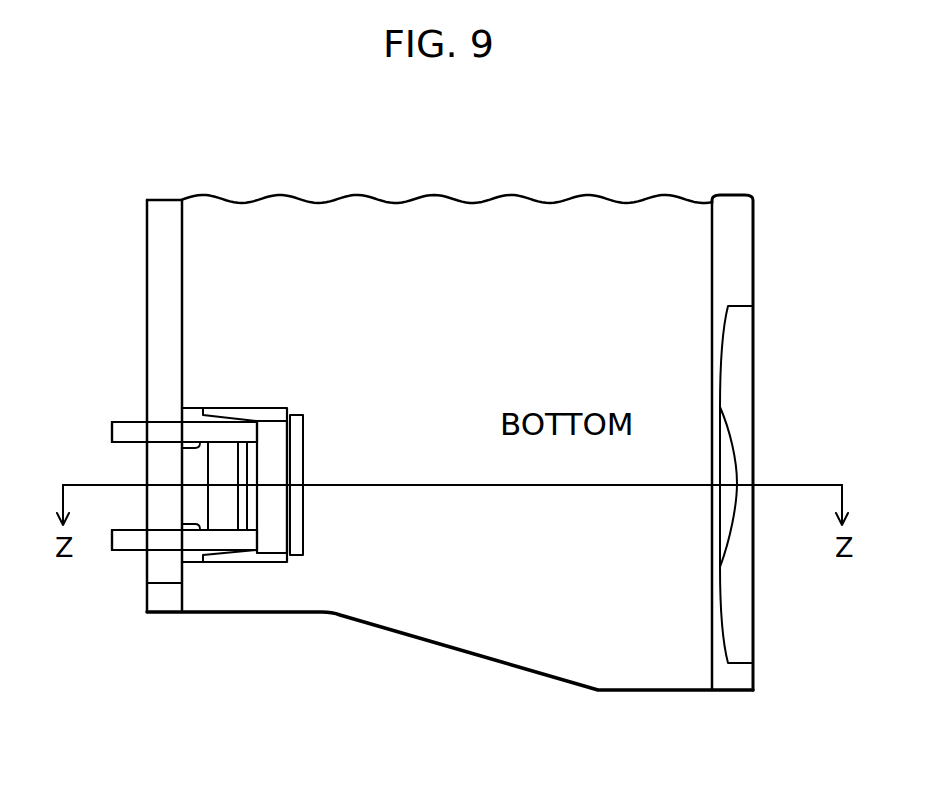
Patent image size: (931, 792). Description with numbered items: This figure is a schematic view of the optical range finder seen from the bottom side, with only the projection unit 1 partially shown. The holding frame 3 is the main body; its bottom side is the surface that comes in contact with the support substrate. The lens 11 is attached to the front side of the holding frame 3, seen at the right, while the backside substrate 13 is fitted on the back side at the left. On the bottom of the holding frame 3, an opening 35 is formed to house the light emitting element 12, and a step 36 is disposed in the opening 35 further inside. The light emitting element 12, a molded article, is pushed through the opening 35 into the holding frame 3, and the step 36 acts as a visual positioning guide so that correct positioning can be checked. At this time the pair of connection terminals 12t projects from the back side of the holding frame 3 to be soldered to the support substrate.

The projection unit 1 is at (425, 676).
The holding frame 3 is at (664, 692).
The lens 11 is at (733, 442).
The light emitting element 12 is at (270, 548).
The connection terminals 12t is at (115, 543).
The backside substrate 13 is at (163, 310).
The opening 35 is at (264, 408).
The step 36 is at (305, 440).